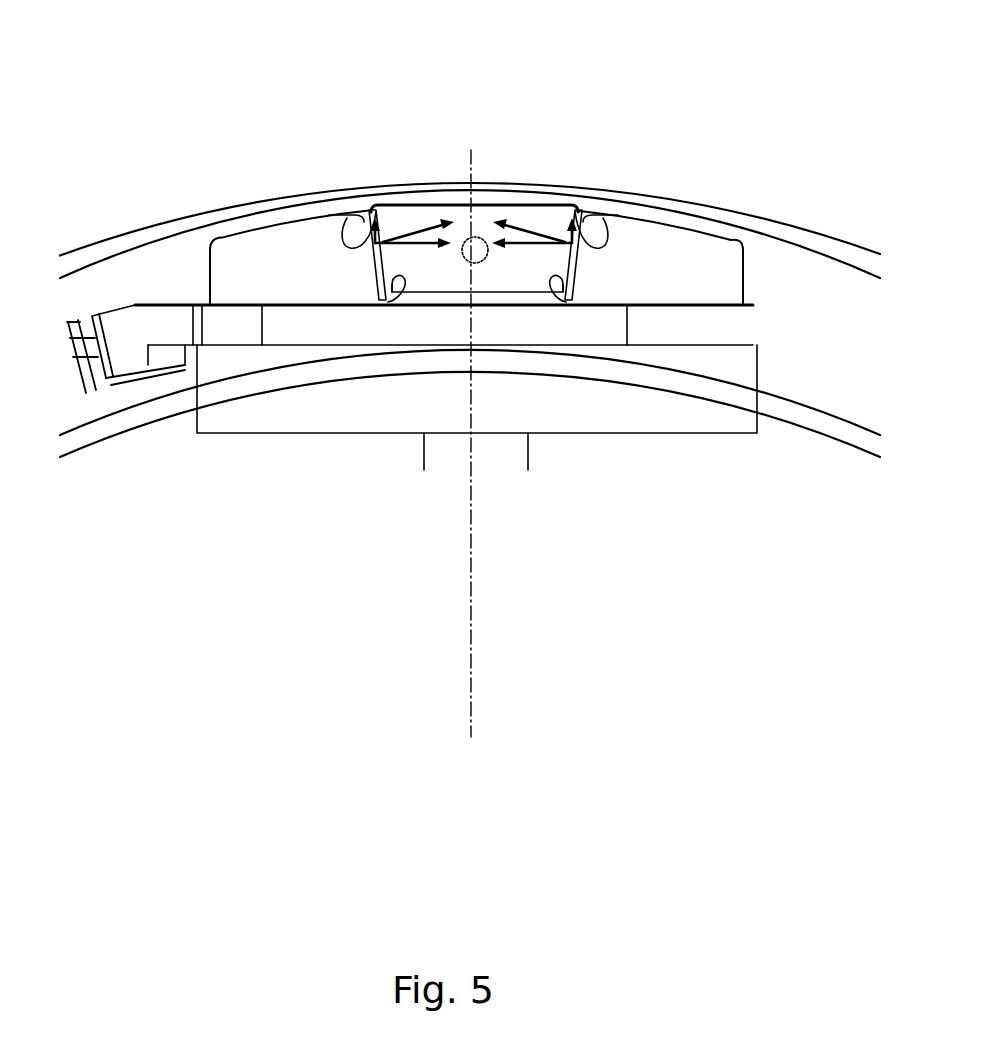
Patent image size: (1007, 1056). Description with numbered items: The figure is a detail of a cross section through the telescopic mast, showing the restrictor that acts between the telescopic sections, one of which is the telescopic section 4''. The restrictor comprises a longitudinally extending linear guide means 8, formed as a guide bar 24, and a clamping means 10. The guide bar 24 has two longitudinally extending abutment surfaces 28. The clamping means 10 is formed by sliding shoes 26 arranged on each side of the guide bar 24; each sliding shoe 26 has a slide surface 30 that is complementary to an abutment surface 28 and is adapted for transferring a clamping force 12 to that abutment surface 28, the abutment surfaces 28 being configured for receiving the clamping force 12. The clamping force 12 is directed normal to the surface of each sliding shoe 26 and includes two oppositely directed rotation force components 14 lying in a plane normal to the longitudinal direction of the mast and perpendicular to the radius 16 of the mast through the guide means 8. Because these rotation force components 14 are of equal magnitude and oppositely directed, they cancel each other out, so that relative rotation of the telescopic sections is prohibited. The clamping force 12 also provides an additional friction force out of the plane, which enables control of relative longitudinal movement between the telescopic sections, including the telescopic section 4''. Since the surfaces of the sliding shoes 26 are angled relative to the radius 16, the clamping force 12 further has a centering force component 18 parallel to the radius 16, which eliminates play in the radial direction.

The telescopic section 4'' is at (847, 347).
The guide means 8 is at (540, 218).
The clamping means 10 is at (146, 238).
The clamping force 12 is at (432, 247).
The rotation force component 14 is at (422, 265).
The radius 16 is at (472, 558).
The centering force component 18 is at (352, 250).
The guide bar 24 is at (400, 228).
The sliding shoe 26 is at (248, 268).
The abutment surface 28 is at (372, 213).
The slide surface 30 is at (402, 293).